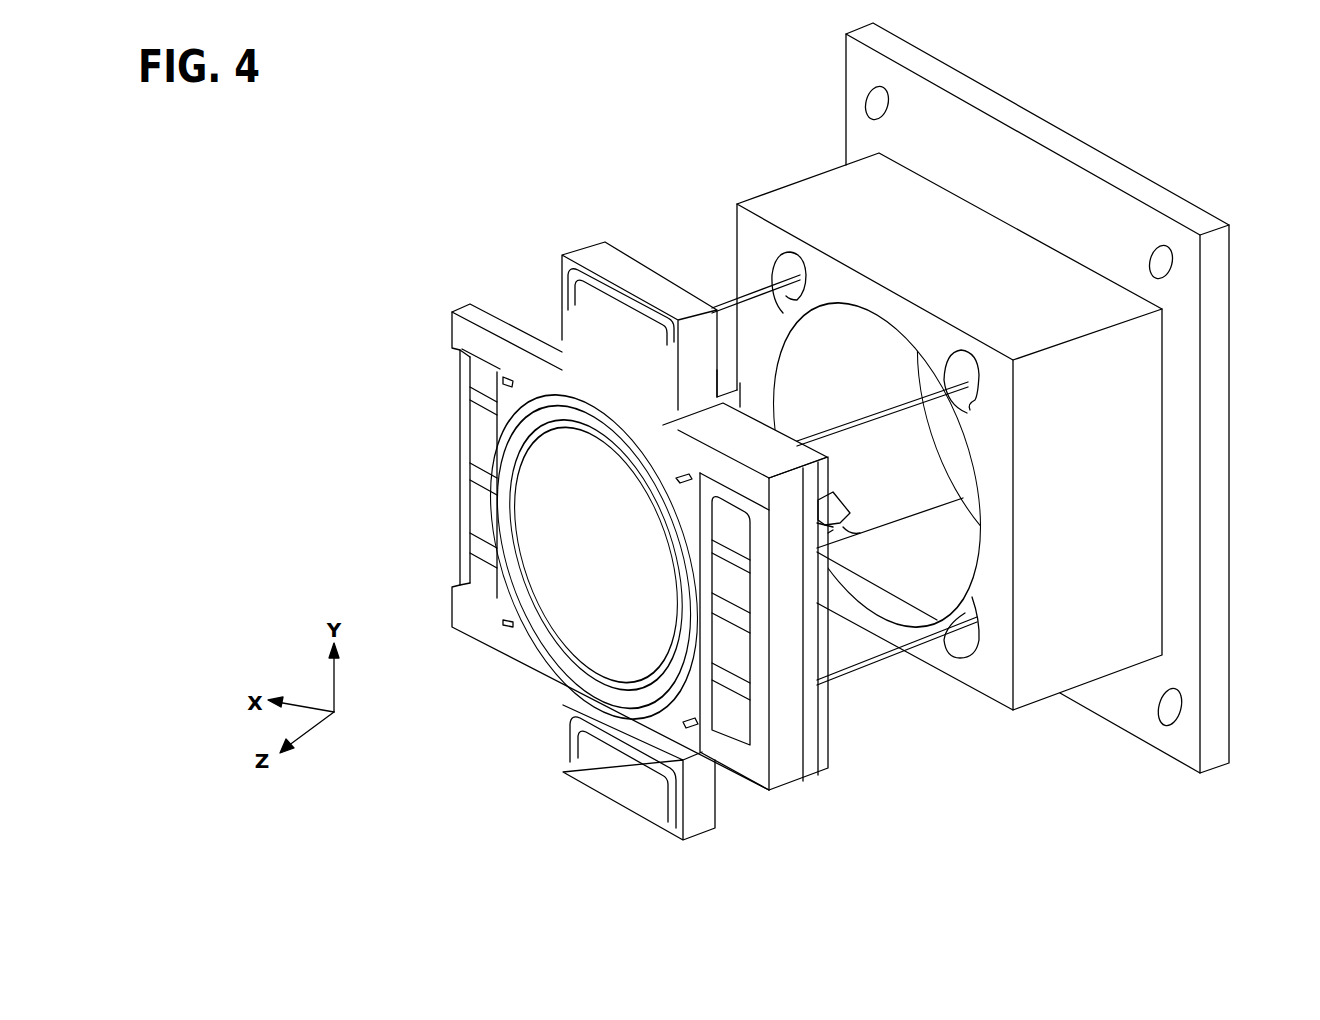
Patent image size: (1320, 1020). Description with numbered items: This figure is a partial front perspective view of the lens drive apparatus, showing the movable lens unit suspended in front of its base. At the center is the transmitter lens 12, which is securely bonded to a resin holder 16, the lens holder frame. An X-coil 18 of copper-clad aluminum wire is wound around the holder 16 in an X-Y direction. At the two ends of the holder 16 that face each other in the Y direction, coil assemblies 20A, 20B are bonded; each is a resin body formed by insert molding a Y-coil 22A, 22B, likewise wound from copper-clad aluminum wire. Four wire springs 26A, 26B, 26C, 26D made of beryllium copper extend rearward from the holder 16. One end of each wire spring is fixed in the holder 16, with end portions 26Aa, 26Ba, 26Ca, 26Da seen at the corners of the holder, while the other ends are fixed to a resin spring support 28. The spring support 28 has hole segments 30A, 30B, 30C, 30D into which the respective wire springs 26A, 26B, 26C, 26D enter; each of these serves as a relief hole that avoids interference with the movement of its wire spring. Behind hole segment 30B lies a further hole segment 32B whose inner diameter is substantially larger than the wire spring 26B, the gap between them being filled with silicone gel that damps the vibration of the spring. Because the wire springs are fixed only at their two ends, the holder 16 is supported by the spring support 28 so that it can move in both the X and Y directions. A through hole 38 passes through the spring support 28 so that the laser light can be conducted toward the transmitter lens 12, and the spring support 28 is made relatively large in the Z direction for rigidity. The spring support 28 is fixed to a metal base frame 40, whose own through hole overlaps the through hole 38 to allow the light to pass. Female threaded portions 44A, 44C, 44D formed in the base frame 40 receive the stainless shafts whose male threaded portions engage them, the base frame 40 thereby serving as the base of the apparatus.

The transmitter lens 12 is at (563, 632).
The holder 16 is at (505, 655).
The X-coil 18 is at (500, 303).
The coil assembly 20A is at (712, 812).
The coil assembly 20B is at (620, 262).
The Y-coil 22A is at (600, 768).
The Y-coil 22B is at (565, 276).
The wire spring 26A is at (862, 676).
The wire spring 26B is at (830, 527).
The wire spring 26C is at (850, 412).
The wire spring 26D is at (716, 300).
The wire end fixing portion 26Aa is at (688, 716).
The wire end fixing portion 26Ba is at (500, 628).
The wire end fixing portion 26Ca is at (676, 483).
The wire end fixing portion 26Da is at (500, 382).
The spring support 28 is at (1150, 630).
The hole segment 30A is at (983, 640).
The hole segment 30B is at (850, 497).
The hole segment 30C is at (982, 400).
The hole segment 30D is at (795, 262).
The hole segment 32B is at (843, 527).
The through hole 38 is at (972, 540).
The base frame 40 is at (1020, 110).
The female threaded portion 44A is at (1170, 725).
The female threaded portion 44C is at (1152, 260).
The female threaded portion 44D is at (866, 102).